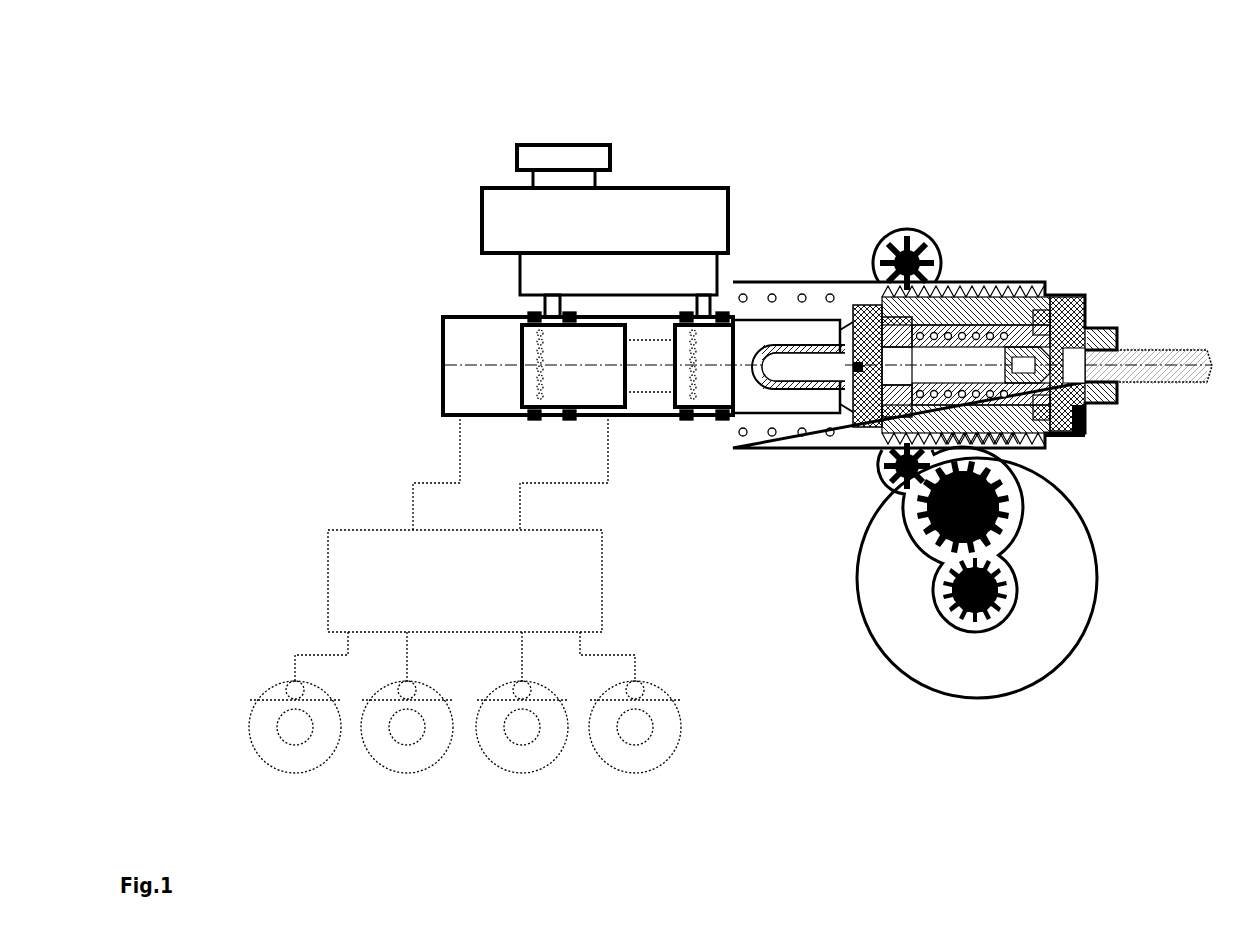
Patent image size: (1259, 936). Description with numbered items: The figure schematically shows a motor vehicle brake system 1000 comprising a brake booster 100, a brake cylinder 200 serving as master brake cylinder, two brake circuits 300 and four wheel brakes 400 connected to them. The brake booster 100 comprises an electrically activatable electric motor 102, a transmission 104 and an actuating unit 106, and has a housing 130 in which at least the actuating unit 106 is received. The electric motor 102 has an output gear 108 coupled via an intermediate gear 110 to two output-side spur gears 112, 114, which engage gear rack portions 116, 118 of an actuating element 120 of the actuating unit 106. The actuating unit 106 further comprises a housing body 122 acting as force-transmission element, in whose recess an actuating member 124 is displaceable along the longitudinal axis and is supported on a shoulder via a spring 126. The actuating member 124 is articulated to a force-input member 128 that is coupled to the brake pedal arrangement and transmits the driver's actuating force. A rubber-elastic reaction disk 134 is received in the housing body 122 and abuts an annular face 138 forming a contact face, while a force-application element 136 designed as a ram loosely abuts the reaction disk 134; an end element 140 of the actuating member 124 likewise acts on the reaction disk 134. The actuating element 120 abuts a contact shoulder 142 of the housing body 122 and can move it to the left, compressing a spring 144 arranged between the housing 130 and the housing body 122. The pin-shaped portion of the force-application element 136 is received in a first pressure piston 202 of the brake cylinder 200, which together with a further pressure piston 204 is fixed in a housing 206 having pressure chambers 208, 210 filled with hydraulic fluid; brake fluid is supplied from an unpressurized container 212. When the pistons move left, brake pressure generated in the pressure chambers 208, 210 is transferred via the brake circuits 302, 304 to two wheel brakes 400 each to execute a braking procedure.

The motor vehicle brake system 1000 is at (1148, 132).
The brake booster 100 is at (1064, 136).
The electric motor 102 is at (1043, 618).
The transmission 104 is at (852, 538).
The actuating unit 106 is at (1013, 217).
The output gear 108 is at (957, 610).
The intermediate gear 110 is at (997, 515).
The spur gear 112 is at (870, 487).
The spur gear 114 is at (918, 245).
The gear rack portion 116 is at (1018, 437).
The gear rack portion 118 is at (1035, 300).
The actuating element 120 is at (1065, 440).
The housing body 122 is at (982, 320).
The actuating member 124 is at (1072, 297).
The spring 126 is at (948, 380).
The force-input member 128 is at (1173, 352).
The housing 130 is at (1088, 418).
The reaction disk 134 is at (868, 377).
The force-application element 136 is at (777, 356).
The annular face 138 is at (868, 318).
The end element 140 is at (898, 368).
The contact shoulder 142 is at (866, 300).
The spring 144 is at (745, 280).
The brake cylinder 200 is at (457, 287).
The first pressure piston 202 is at (718, 380).
The pressure piston 204 is at (605, 392).
The housing 206 is at (443, 331).
The pressure chamber 208 is at (648, 383).
The pressure chamber 210 is at (463, 383).
The unpressurized container 212 is at (643, 192).
The brake circuits 300 is at (377, 479).
The brake circuit 302 is at (413, 510).
The brake circuit 304 is at (520, 503).
The wheel brakes 400 is at (277, 762).